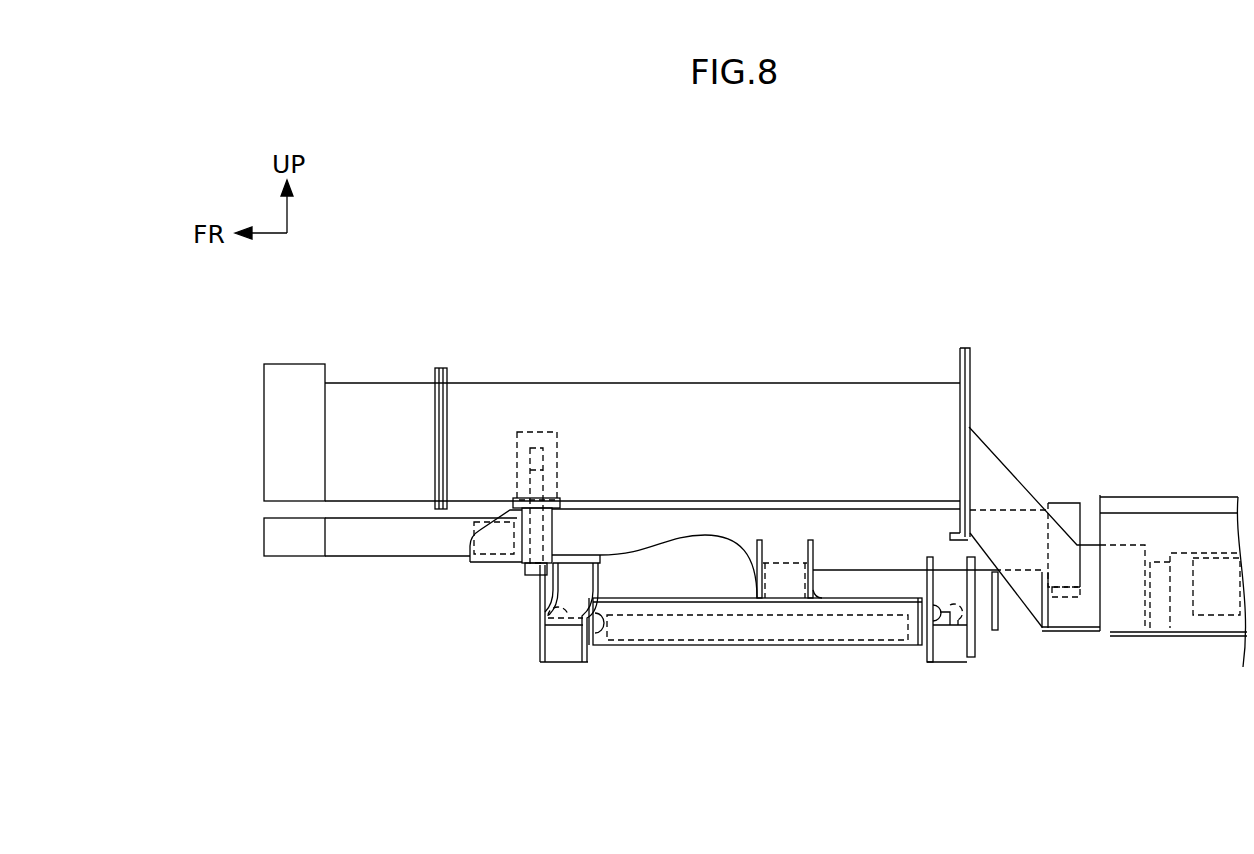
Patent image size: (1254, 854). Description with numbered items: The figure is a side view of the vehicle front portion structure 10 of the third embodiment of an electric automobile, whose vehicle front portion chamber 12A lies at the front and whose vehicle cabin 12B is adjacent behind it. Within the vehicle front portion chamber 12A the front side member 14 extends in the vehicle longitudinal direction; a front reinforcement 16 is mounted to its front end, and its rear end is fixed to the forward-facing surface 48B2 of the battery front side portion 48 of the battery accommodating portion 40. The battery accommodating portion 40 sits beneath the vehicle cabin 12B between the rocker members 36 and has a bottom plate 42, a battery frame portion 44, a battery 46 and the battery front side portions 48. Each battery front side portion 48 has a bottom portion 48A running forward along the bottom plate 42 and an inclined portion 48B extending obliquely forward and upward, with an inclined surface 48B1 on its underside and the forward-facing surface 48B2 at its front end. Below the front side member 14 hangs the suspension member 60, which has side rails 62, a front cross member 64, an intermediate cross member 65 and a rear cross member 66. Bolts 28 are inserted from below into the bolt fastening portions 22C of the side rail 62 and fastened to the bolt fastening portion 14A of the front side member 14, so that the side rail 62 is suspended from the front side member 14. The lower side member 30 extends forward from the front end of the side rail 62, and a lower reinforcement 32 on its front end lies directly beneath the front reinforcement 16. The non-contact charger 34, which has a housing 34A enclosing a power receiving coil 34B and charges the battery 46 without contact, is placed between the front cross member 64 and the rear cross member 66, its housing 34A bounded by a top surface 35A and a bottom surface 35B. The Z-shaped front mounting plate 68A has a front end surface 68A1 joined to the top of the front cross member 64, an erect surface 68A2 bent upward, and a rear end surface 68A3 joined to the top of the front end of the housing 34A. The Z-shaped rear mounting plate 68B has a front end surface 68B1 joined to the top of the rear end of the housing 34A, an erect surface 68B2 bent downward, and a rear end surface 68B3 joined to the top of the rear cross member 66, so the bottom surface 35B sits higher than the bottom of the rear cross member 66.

The vehicle lower structure 10 is at (1108, 176).
The vehicle front portion chamber 12A is at (770, 272).
The vehicle cabin 12B is at (1223, 274).
The front side member 14 is at (649, 383).
The bolt fastening portion 14A is at (560, 453).
The front reinforcement 16 is at (291, 364).
The bolt fastening portion 22C is at (552, 533).
The bolt 28 is at (535, 578).
The lower side member 30 is at (389, 556).
The lower reinforcement 32 is at (287, 556).
The non-contact charger 34 is at (765, 727).
The housing 34A is at (729, 645).
The power receiving coil 34B is at (670, 645).
The top surface 35A is at (710, 598).
The bottom surface 35B is at (780, 645).
The rocker member 36 is at (1190, 497).
The battery accommodating portion 40 is at (1023, 283).
The bottom plate 42 is at (1118, 632).
The battery frame portion 44 is at (1140, 632).
The battery 46 is at (1207, 636).
The battery front side portion 48 is at (1007, 460).
The bottom portion 48A is at (1087, 530).
The inclined portion 48B is at (1025, 492).
The inclined surface 48B1 is at (1042, 630).
The forward-facing surface 48B2 is at (960, 448).
The suspension member 60 is at (612, 734).
The side rail 62 is at (642, 537).
The front cross member 64 is at (570, 662).
The intermediate cross member 65 is at (813, 578).
The rear cross member 66 is at (959, 660).
The front mounting plate 68A is at (390, 637).
The front end surface 68A1 is at (548, 618).
The erect surface 68A2 is at (590, 633).
The rear end surface 68A3 is at (597, 573).
The rear mounting plate 68B is at (857, 815).
The front end surface 68B1 is at (905, 598).
The erect surface 68B2 is at (928, 655).
The rear end surface 68B3 is at (945, 625).